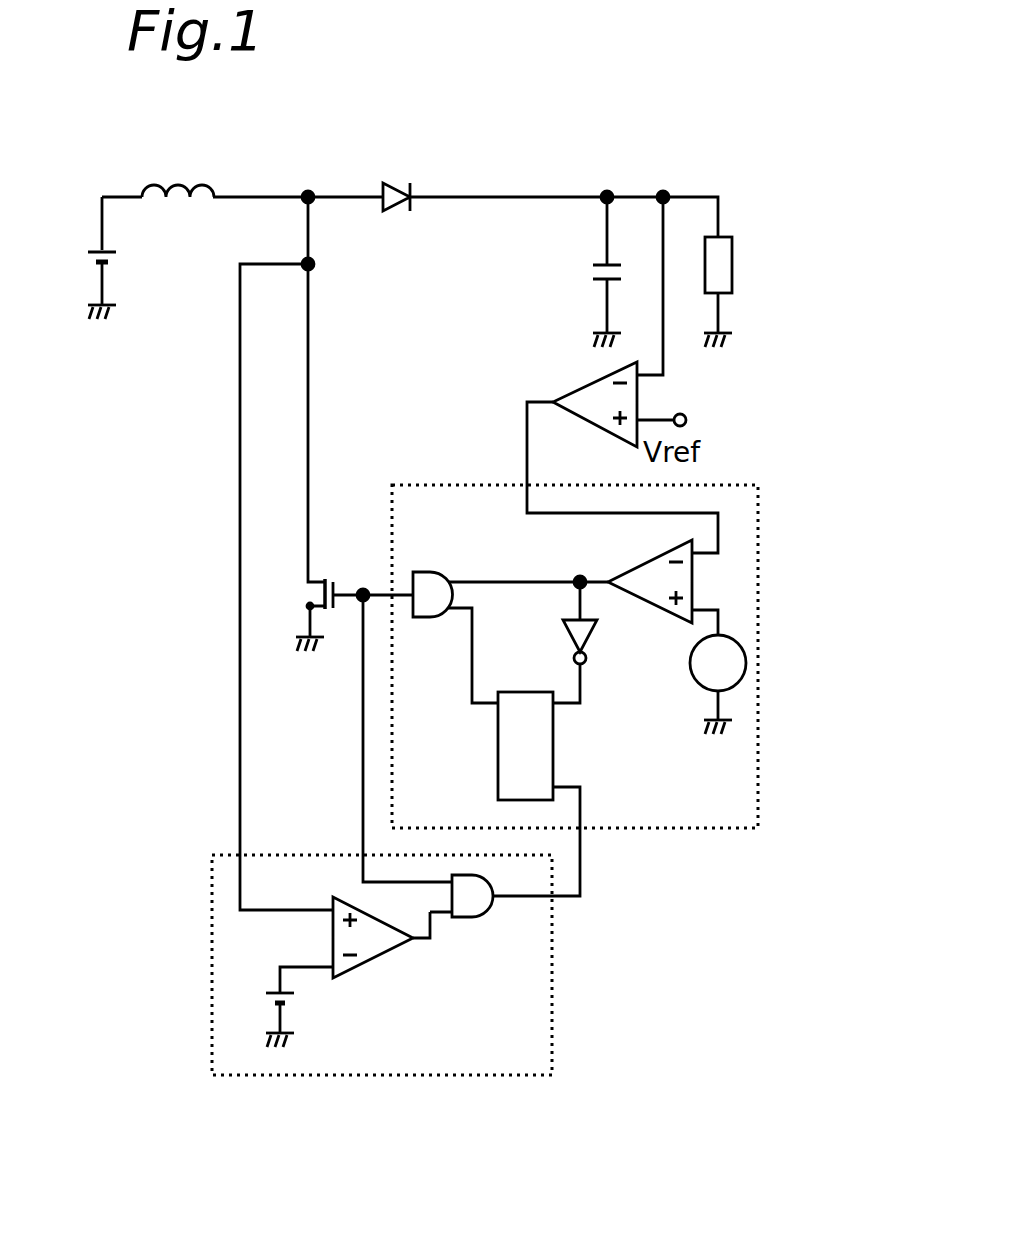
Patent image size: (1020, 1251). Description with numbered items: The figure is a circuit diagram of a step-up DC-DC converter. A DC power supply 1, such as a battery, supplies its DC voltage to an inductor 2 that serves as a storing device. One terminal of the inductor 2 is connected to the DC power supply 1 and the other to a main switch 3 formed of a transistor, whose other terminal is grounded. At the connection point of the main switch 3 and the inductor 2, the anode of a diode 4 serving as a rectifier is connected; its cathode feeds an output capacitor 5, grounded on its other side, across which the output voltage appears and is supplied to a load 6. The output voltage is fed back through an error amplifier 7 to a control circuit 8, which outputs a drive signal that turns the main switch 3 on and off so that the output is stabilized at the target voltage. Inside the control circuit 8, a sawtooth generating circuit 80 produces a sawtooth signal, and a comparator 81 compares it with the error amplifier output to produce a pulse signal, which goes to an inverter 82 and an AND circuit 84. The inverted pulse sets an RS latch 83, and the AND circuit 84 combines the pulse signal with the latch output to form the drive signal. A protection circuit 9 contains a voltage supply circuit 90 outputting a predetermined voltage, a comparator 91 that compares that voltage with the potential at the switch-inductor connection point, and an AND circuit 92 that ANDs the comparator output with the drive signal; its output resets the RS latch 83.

The DC power supply 1 is at (108, 266).
The inductor 2 is at (192, 183).
The main switch 3 is at (330, 580).
The diode 4 is at (400, 183).
The output capacitor 5 is at (590, 272).
The load 6 is at (722, 296).
The error amplifier 7 is at (600, 378).
The control circuit 8 is at (437, 485).
The sawtooth generating circuit 80 is at (695, 683).
The comparator 81 is at (638, 566).
The inverter 82 is at (563, 635).
The RS latch 83 is at (497, 745).
The AND circuit 84 is at (433, 620).
The protection circuit 9 is at (555, 1005).
The voltage supply circuit 90 is at (296, 1007).
The comparator 91 is at (383, 955).
The AND circuit 92 is at (478, 918).